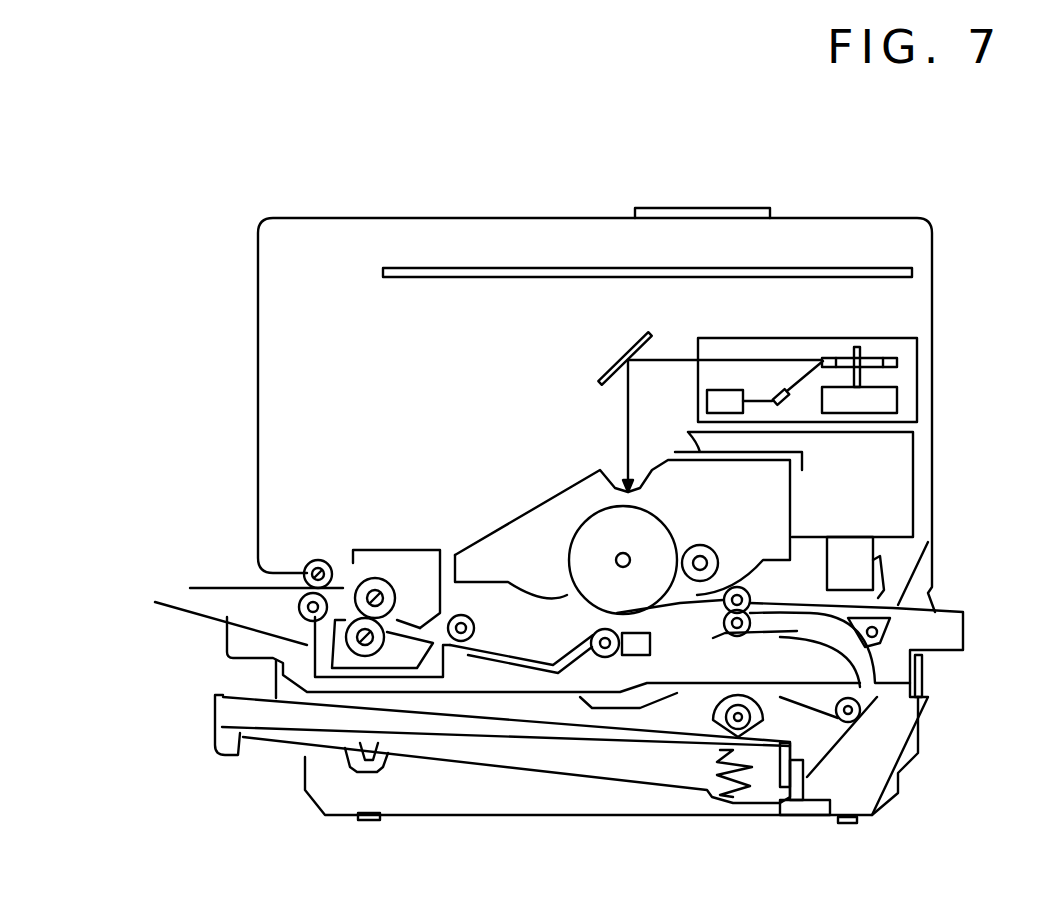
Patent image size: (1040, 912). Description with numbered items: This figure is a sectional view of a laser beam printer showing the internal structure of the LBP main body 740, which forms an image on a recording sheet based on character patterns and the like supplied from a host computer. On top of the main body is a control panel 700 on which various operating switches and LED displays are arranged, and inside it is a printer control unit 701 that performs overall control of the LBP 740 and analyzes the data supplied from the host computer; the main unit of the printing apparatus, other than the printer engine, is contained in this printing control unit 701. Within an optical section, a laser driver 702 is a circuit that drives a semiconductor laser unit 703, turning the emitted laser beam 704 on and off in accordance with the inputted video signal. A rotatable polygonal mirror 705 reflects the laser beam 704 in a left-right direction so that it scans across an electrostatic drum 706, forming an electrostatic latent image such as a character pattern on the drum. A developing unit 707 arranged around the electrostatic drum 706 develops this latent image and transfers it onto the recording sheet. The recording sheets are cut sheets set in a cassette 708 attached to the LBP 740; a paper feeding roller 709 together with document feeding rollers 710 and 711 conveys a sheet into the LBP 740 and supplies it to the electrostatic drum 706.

The control panel 700 is at (723, 208).
The LBP main body 740 is at (885, 218).
The printer control unit 701 is at (912, 272).
The laser beam 704 is at (787, 357).
The rotatable polygonal mirror 705 is at (897, 362).
The laser driver 702 is at (707, 400).
The semiconductor laser unit 703 is at (787, 403).
The electrostatic drum 706 is at (592, 517).
The developing unit 707 is at (503, 540).
The document feeding roller 711 is at (727, 640).
The cassette 708 is at (215, 720).
The paper feeding roller 709 is at (713, 723).
The document feeding roller 710 is at (852, 722).